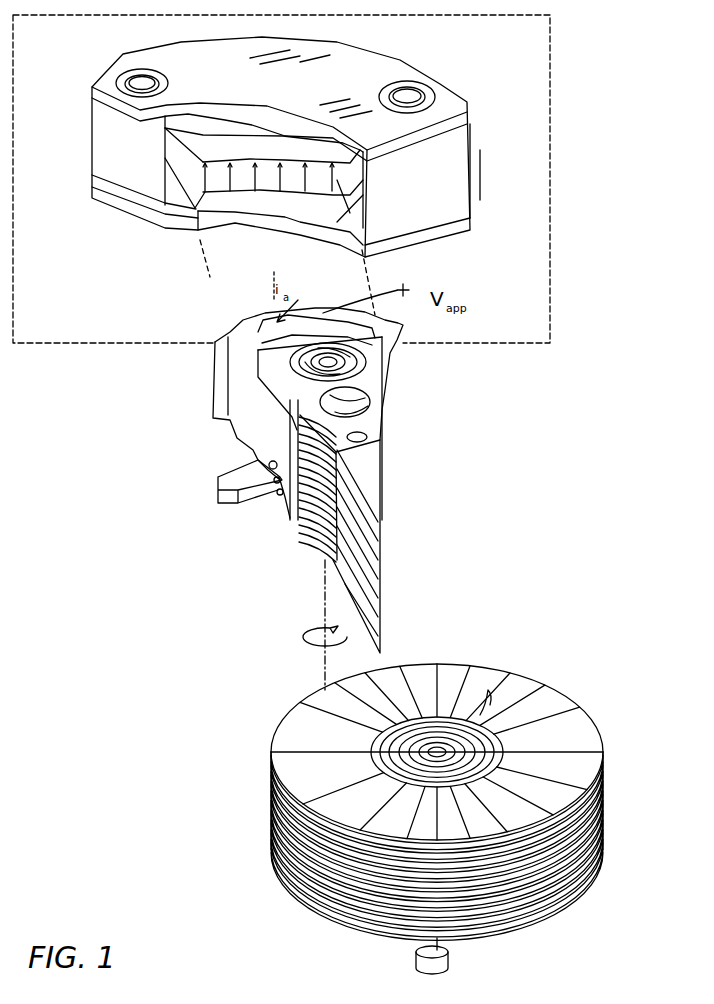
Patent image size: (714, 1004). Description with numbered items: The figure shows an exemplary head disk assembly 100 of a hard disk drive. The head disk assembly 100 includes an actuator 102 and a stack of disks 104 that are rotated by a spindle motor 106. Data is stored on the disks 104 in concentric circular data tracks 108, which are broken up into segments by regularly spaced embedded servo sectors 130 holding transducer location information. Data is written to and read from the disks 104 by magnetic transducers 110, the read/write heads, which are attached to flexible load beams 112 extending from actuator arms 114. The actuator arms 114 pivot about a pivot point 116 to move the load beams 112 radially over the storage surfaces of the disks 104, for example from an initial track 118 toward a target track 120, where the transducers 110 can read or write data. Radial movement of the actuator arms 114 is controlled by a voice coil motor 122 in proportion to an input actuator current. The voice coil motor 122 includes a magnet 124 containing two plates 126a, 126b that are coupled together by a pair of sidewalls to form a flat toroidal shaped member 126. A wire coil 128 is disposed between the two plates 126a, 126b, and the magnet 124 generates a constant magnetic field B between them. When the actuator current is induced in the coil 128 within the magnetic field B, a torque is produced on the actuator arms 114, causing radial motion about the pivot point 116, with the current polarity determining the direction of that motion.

The head disk assembly 100 is at (515, 425).
The actuator 102 is at (77, 420).
The disks 104 is at (500, 935).
The spindle motor 106 is at (418, 958).
The data tracks 108 is at (458, 722).
The magnetic transducers 110 is at (383, 532).
The load beams 112 is at (380, 483).
The actuator arms 114 is at (383, 412).
The pivot point 116 is at (360, 362).
The initial track 118 is at (490, 737).
The target track 120 is at (493, 740).
The voice coil motor 122 is at (553, 170).
The magnet 124 is at (380, 44).
The flat toroidal shaped member 126 is at (457, 167).
The plate 126a is at (240, 143).
The plate 126b is at (238, 208).
The wire coil 128 is at (250, 325).
The servo sectors 130 is at (293, 760).
The magnetic field B is at (192, 160).